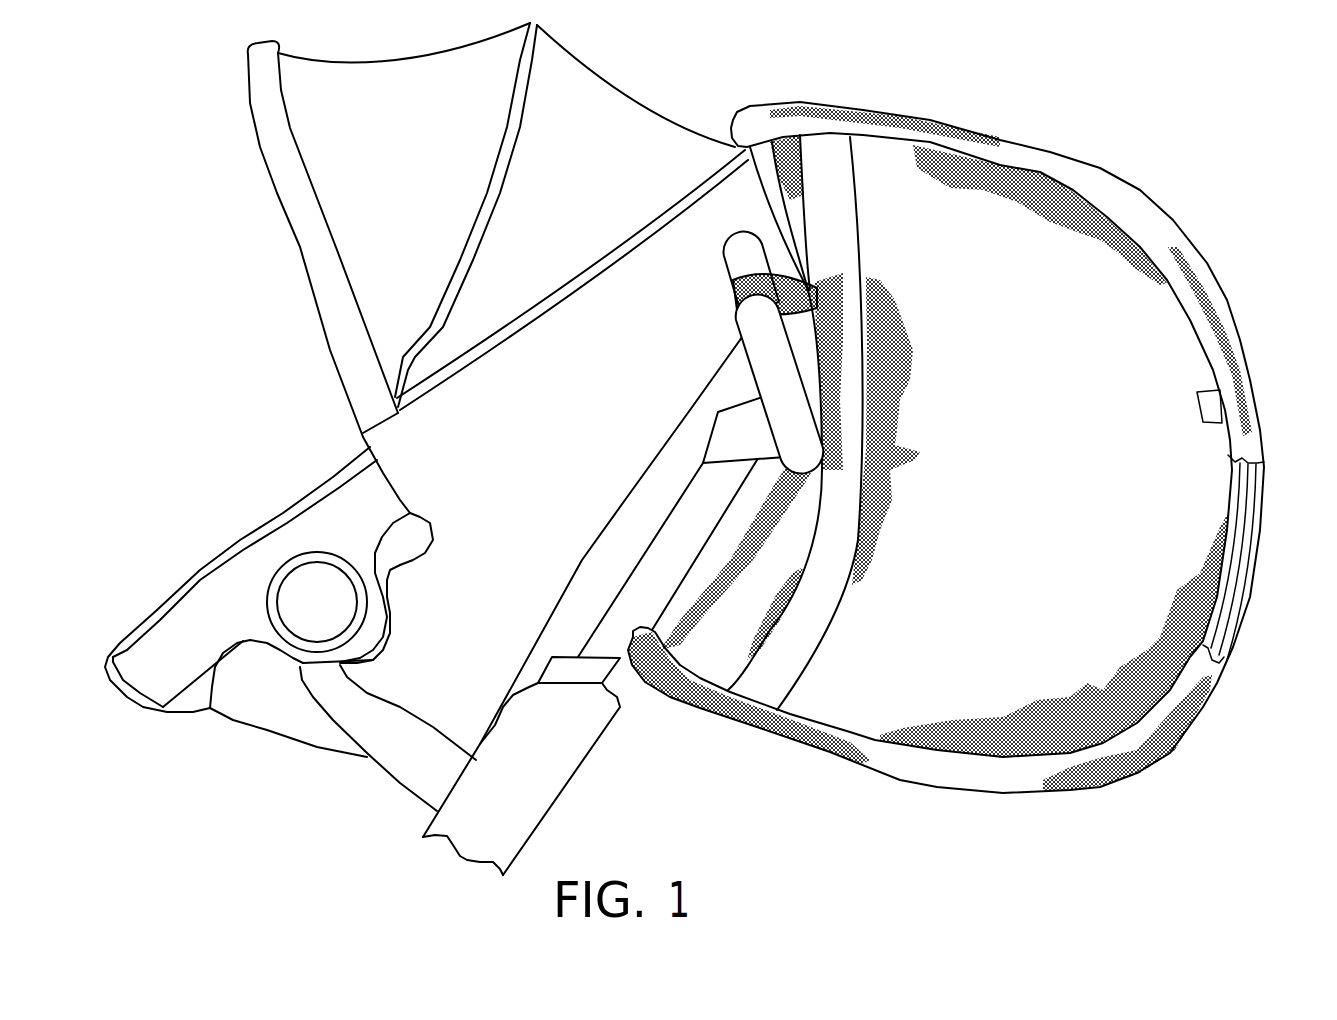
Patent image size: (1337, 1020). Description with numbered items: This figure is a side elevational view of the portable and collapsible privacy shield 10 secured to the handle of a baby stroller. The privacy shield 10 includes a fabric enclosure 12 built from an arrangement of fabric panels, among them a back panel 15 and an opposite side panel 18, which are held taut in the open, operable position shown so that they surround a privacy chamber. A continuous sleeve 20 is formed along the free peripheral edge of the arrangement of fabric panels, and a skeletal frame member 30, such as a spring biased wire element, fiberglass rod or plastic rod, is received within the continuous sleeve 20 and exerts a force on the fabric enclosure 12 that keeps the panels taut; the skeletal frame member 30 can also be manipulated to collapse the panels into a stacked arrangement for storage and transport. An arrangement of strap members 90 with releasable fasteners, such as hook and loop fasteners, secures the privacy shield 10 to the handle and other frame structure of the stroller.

The privacy shield 10 is at (981, 430).
The fabric enclosure 12 is at (1072, 263).
The back panel 15 is at (706, 658).
The side panel 18 is at (932, 683).
The continuous sleeve 20 is at (1197, 282).
The skeletal frame member 30 is at (1230, 603).
The strap members 90 is at (735, 290).